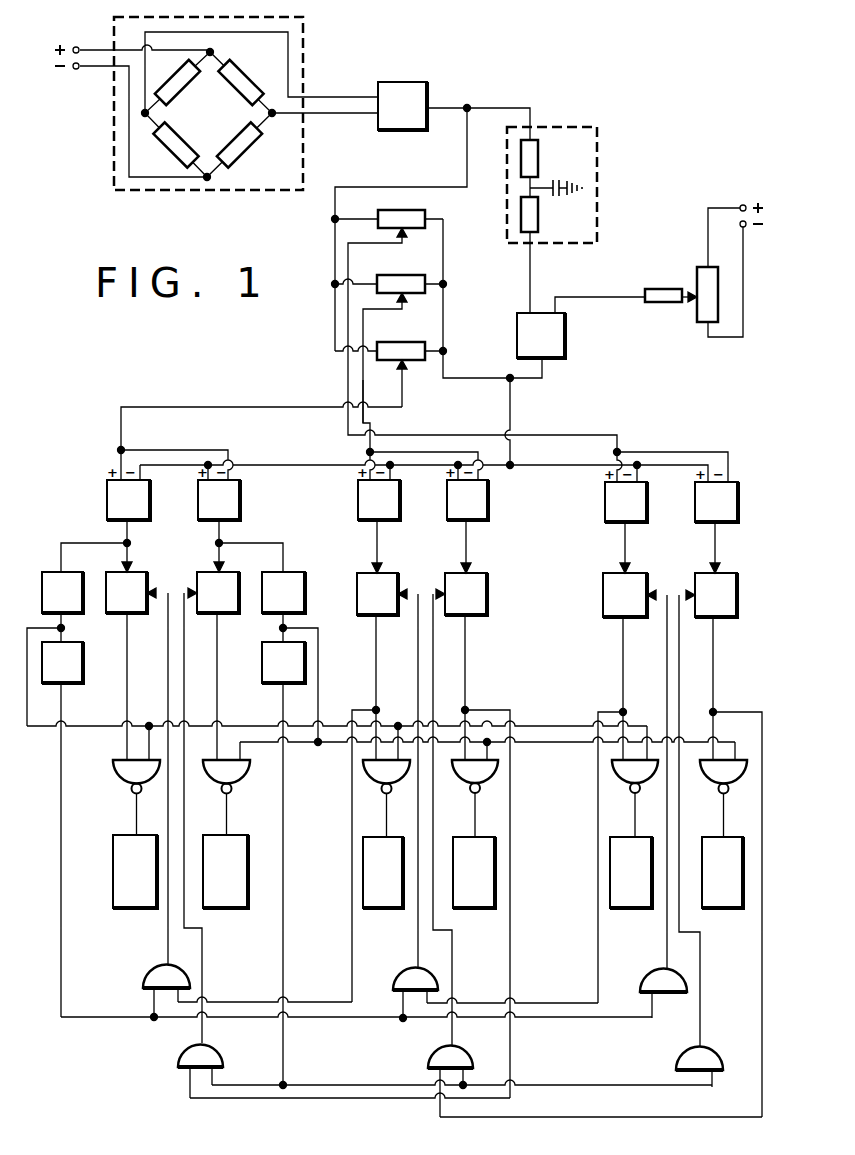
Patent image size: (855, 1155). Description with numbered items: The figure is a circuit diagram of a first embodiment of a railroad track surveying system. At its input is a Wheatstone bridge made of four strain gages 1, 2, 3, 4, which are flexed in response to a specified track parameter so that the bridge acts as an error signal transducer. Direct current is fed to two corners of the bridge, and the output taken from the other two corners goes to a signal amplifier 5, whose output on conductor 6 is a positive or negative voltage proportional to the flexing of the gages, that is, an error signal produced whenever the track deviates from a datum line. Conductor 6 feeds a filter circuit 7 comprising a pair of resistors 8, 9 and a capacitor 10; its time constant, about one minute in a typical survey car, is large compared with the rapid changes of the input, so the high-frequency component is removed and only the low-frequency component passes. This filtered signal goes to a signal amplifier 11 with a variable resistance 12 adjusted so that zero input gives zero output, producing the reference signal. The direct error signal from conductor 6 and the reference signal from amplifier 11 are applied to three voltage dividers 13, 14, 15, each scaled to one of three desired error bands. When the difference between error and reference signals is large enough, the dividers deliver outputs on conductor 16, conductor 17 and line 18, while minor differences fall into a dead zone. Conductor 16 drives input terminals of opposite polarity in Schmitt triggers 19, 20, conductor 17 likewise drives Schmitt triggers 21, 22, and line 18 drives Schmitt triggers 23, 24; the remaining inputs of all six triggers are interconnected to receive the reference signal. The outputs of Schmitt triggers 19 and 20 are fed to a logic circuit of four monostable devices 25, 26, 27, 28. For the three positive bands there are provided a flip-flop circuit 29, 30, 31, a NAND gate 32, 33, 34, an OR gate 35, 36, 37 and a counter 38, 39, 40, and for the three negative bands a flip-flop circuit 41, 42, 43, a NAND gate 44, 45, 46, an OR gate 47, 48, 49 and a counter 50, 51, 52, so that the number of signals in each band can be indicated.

The strain gage 1 is at (181, 80).
The strain gage 2 is at (238, 77).
The strain gage 3 is at (240, 150).
The strain gage 4 is at (177, 147).
The signal amplifier 5 is at (418, 97).
The conductor 6 is at (447, 110).
The filter circuit 7 is at (580, 146).
The resistor 8 is at (522, 160).
The resistor 9 is at (522, 208).
The capacitor 10 is at (562, 182).
The signal amplifier 11 is at (555, 345).
The variable resistance 12 is at (689, 288).
The voltage divider 13 is at (410, 352).
The voltage divider 14 is at (405, 285).
The voltage divider 15 is at (400, 212).
The conductor 16 is at (228, 408).
The conductor 17 is at (363, 381).
The line 18 is at (520, 442).
The Schmitt trigger 19 is at (140, 506).
The Schmitt trigger 20 is at (230, 506).
The Schmitt trigger 21 is at (390, 506).
The Schmitt trigger 22 is at (478, 506).
The Schmitt trigger 23 is at (637, 508).
The Schmitt trigger 24 is at (728, 508).
The monostable device 25 is at (68, 614).
The monostable device 26 is at (76, 672).
The monostable device 27 is at (296, 606).
The monostable device 28 is at (272, 662).
The flip-flop circuit 29 is at (124, 614).
The flip-flop circuit 30 is at (374, 616).
The flip-flop circuit 31 is at (628, 613).
The NAND gate 32 is at (126, 773).
The NAND gate 33 is at (378, 773).
The NAND gate 34 is at (626, 773).
The OR gate 35 is at (150, 981).
The OR gate 36 is at (402, 984).
The OR gate 37 is at (650, 984).
The counter 38 is at (128, 900).
The counter 39 is at (383, 900).
The counter 40 is at (633, 900).
The flip-flop circuit 41 is at (216, 614).
The flip-flop circuit 42 is at (463, 616).
The flip-flop circuit 43 is at (725, 615).
The NAND gate 44 is at (216, 773).
The NAND gate 45 is at (466, 773).
The NAND gate 46 is at (714, 773).
The OR gate 47 is at (182, 1063).
The OR gate 48 is at (456, 1054).
The OR gate 49 is at (688, 1059).
The counter 50 is at (219, 900).
The counter 51 is at (475, 900).
The counter 52 is at (724, 900).